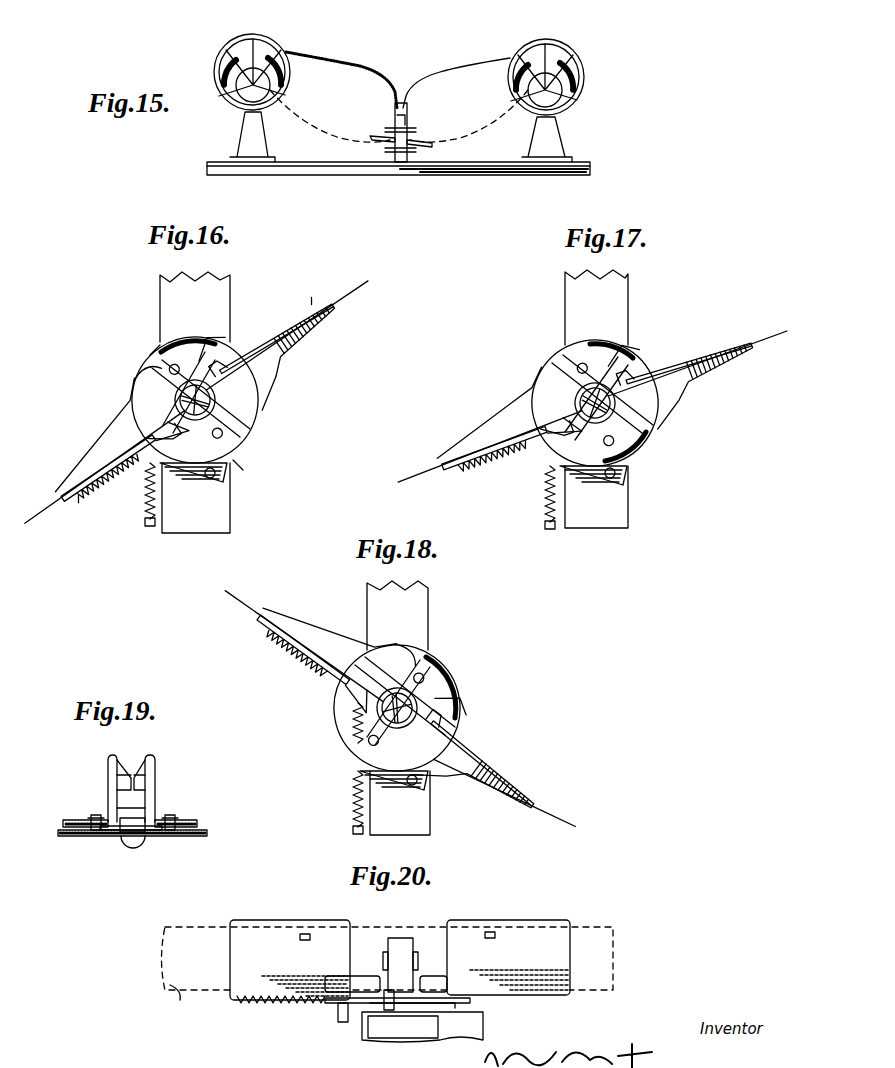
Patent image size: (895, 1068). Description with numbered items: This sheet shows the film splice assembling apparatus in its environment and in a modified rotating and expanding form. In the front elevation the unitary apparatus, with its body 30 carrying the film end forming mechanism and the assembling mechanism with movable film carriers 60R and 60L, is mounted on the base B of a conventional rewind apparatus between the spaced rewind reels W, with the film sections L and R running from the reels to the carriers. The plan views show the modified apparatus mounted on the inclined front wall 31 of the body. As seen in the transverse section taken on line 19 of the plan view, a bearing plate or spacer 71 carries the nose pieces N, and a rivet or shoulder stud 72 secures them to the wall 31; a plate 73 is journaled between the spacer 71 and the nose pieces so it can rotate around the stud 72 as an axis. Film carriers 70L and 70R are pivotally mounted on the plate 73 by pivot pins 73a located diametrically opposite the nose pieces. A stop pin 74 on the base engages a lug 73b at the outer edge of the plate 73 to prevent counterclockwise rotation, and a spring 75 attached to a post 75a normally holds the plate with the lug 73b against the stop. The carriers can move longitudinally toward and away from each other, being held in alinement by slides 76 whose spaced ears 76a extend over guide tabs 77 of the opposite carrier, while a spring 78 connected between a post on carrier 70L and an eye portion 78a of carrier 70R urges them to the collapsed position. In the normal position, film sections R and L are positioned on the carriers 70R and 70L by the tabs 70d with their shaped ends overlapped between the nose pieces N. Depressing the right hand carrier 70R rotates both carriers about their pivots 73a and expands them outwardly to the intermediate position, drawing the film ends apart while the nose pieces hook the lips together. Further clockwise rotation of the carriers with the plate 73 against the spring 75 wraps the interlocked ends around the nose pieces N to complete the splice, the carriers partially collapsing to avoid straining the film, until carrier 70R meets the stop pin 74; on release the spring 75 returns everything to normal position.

In FIG. 15, the rewind reels W is at (280, 52).
In FIG. 15, the film section L is at (365, 66).
In FIG. 16, the film section L is at (33, 520).
In FIG. 17, the film section L is at (396, 470).
In FIG. 18, the film section L is at (232, 607).
In FIG. 20, the film section L is at (182, 985).
In FIG. 15, the film section R is at (462, 64).
In FIG. 16, the film section R is at (366, 283).
In FIG. 17, the film section R is at (785, 332).
In FIG. 18, the film section R is at (576, 825).
In FIG. 20, the film section R is at (612, 968).
In FIG. 15, the base B is at (485, 172).
In FIG. 15, the body 30 is at (400, 166).
In FIG. 20, the body 30 is at (365, 1030).
In FIG. 15, the film carrier 60L is at (373, 137).
In FIG. 15, the film carrier 60R is at (438, 137).
In FIG. 16, the front wall 31 is at (218, 293).
In FIG. 17, the front wall 31 is at (622, 312).
In FIG. 18, the front wall 31 is at (430, 628).
In FIG. 19, the front wall 31 is at (180, 838).
In FIG. 16, the section line 19 is at (158, 350).
In FIG. 16, the plate 73 is at (255, 424).
In FIG. 17, the plate 73 is at (601, 402).
In FIG. 18, the plate 73 is at (402, 704).
In FIG. 19, the plate 73 is at (158, 812).
In FIG. 20, the plate 73 is at (484, 1020).
In FIG. 16, the pivot pins 73a is at (172, 366).
In FIG. 17, the pivot pins 73a is at (575, 365).
In FIG. 18, the pivot pins 73a is at (426, 676).
In FIG. 19, the pivot pins 73a is at (96, 814).
In FIG. 16, the lug 73b is at (196, 482).
In FIG. 17, the lug 73b is at (590, 482).
In FIG. 18, the lug 73b is at (335, 745).
In FIG. 16, the film carrier 70L is at (100, 440).
In FIG. 17, the film carrier 70L is at (500, 413).
In FIG. 18, the film carrier 70L is at (300, 630).
In FIG. 19, the film carrier 70L is at (60, 828).
In FIG. 20, the film carrier 70L is at (253, 940).
In FIG. 16, the film carrier 70R is at (302, 353).
In FIG. 17, the film carrier 70R is at (705, 381).
In FIG. 18, the film carrier 70R is at (480, 778).
In FIG. 19, the film carrier 70R is at (200, 824).
In FIG. 20, the film carrier 70R is at (557, 925).
In FIG. 16, the tabs 70d is at (283, 370).
In FIG. 16, the stop pin 74 is at (215, 480).
In FIG. 17, the stop pin 74 is at (617, 473).
In FIG. 18, the stop pin 74 is at (418, 783).
In FIG. 20, the stop pin 74 is at (338, 1006).
In FIG. 16, the spring 75 is at (148, 495).
In FIG. 17, the spring 75 is at (548, 500).
In FIG. 18, the spring 75 is at (355, 790).
In FIG. 16, the post 75a is at (155, 526).
In FIG. 16, the slides 76 is at (237, 357).
In FIG. 17, the slides 76 is at (537, 395).
In FIG. 18, the slides 76 is at (340, 690).
In FIG. 16, the ears 76a is at (202, 348).
In FIG. 18, the ears 76a is at (430, 700).
In FIG. 16, the guide tabs 77 is at (163, 350).
In FIG. 17, the guide tabs 77 is at (622, 353).
In FIG. 18, the guide tabs 77 is at (468, 712).
In FIG. 16, the spring 78 is at (92, 494).
In FIG. 17, the spring 78 is at (470, 470).
In FIG. 18, the spring 78 is at (290, 650).
In FIG. 20, the spring 78 is at (262, 1005).
In FIG. 16, the eye portion 78a is at (130, 456).
In FIG. 17, the eye portion 78a is at (533, 447).
In FIG. 16, the nose pieces N is at (225, 398).
In FIG. 17, the nose pieces N is at (594, 402).
In FIG. 18, the nose pieces N is at (397, 708).
In FIG. 19, the nose pieces N is at (136, 758).
In FIG. 20, the nose pieces N is at (405, 945).
In FIG. 19, the bearing plate 71 is at (118, 832).
In FIG. 19, the shoulder stud 72 is at (133, 842).